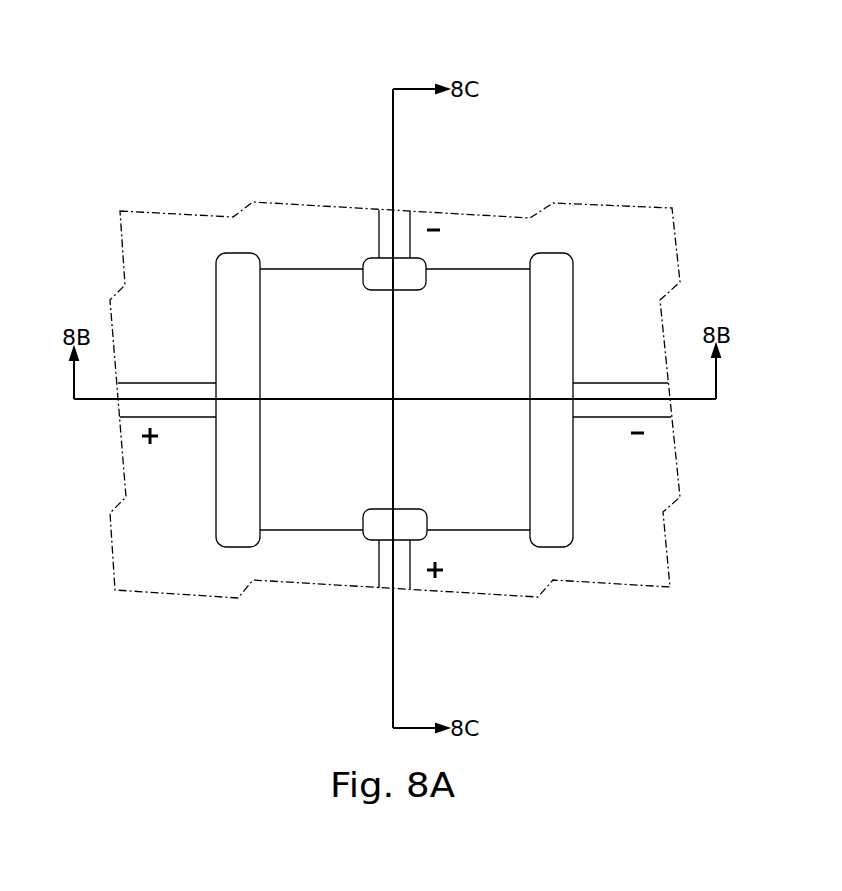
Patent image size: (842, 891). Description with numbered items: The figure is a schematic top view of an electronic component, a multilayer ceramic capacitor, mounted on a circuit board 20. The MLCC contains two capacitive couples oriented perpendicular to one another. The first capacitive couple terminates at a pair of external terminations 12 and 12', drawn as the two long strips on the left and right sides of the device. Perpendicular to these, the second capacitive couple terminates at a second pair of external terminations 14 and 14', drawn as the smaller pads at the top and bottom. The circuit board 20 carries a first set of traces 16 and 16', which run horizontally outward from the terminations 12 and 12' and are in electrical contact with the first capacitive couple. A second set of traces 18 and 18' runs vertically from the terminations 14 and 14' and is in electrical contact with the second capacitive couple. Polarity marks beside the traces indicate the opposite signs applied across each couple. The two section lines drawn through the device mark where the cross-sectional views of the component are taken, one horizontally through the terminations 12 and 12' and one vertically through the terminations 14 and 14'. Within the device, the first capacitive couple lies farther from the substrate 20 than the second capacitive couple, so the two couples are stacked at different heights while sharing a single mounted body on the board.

The external termination 12 is at (231, 331).
The external termination 12' is at (577, 327).
The external termination 14 is at (368, 572).
The external termination 14' is at (359, 216).
The trace 16 is at (142, 429).
The trace 16' is at (656, 429).
The trace 18 is at (417, 604).
The trace 18' is at (416, 200).
The circuit board 20 is at (179, 566).